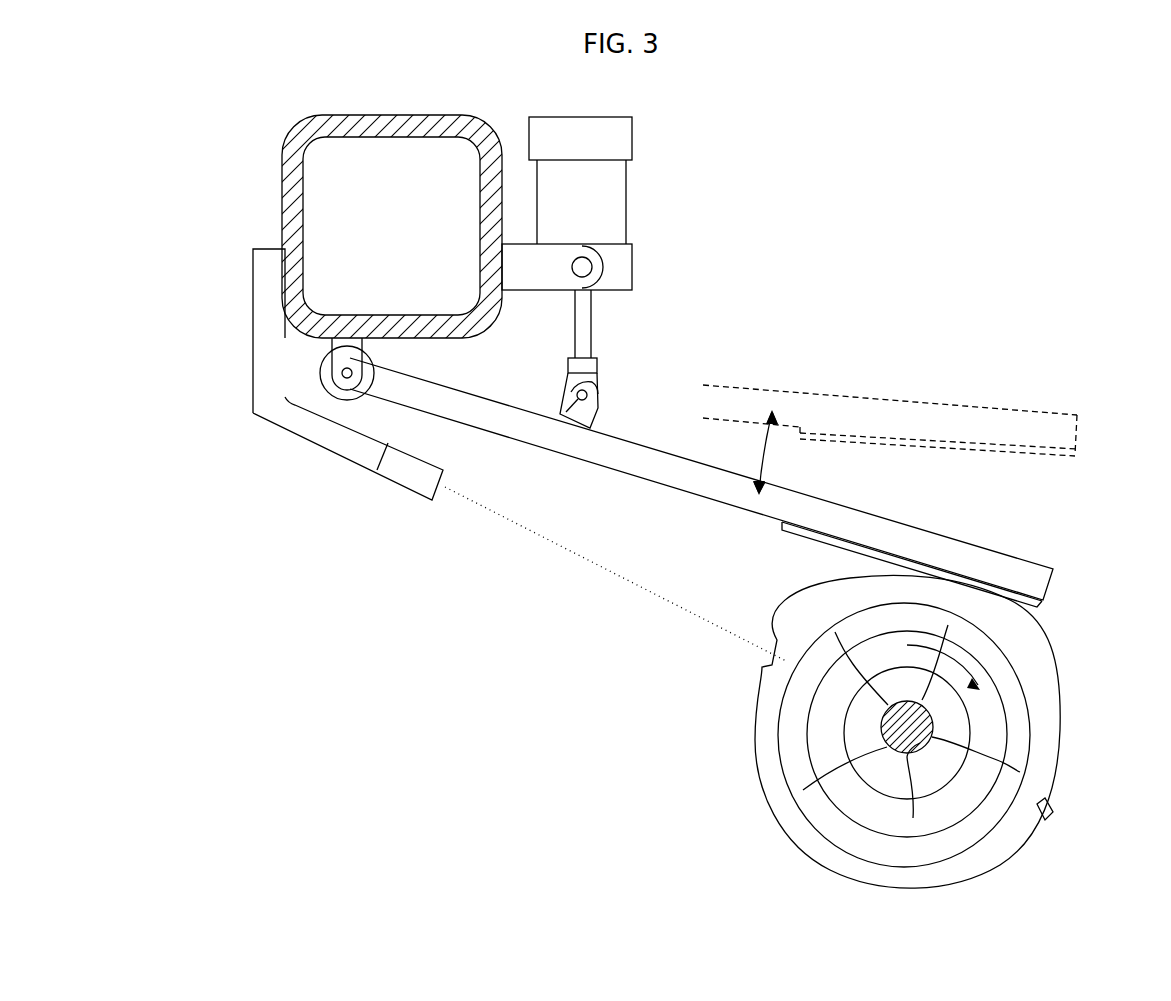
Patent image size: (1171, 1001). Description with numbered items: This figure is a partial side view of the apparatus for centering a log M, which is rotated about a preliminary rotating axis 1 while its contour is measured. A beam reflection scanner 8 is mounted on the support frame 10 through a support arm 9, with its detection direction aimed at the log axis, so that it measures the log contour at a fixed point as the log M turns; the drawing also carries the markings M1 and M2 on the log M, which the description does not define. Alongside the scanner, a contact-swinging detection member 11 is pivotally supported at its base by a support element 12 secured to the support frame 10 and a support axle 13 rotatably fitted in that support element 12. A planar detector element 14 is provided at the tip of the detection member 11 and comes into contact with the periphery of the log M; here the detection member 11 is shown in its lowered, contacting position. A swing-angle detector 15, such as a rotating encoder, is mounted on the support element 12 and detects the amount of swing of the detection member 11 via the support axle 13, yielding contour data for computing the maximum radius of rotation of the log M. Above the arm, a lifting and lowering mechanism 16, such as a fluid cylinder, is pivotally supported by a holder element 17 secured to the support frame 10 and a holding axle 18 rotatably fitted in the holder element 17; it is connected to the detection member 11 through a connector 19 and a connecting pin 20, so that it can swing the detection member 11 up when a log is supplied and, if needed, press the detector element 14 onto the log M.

The preliminary rotating axis 1 is at (930, 718).
The beam reflection scanner 8 is at (410, 475).
The support arm 9 is at (263, 273).
The support frame 10 is at (297, 205).
The contact-swinging detection member 11 is at (939, 549).
The support element 12 is at (357, 345).
The support axle 13 is at (338, 381).
The planar detector element 14 is at (1035, 606).
The swing-angle detector 15 is at (324, 368).
The lifting and lowering mechanism 16 is at (612, 205).
The holder element 17 is at (540, 282).
The holding axle 18 is at (591, 262).
The connector 19 is at (598, 420).
The connecting pin 20 is at (571, 428).
The log M is at (803, 755).
The wheel projection M1 is at (1050, 812).
The wheel reference line M2 is at (773, 663).